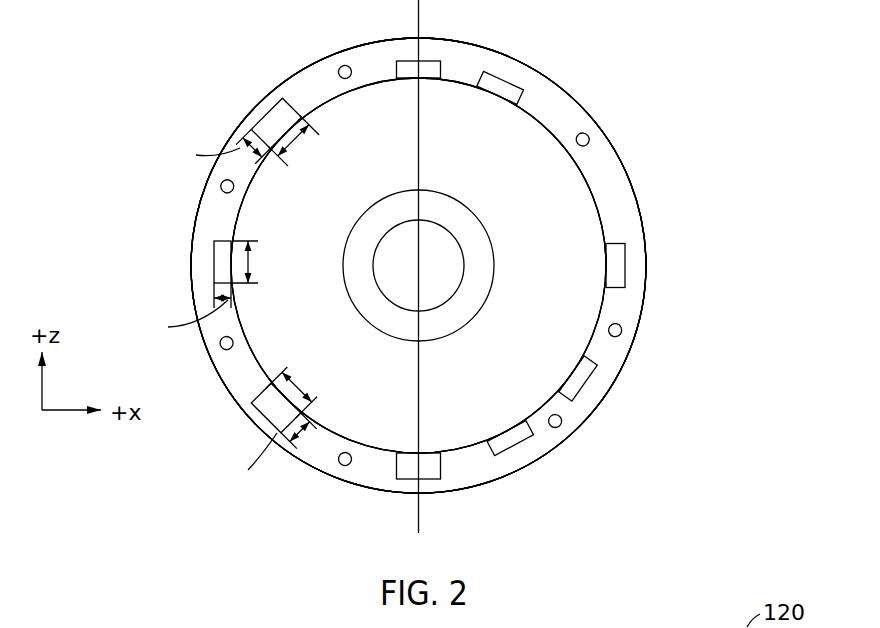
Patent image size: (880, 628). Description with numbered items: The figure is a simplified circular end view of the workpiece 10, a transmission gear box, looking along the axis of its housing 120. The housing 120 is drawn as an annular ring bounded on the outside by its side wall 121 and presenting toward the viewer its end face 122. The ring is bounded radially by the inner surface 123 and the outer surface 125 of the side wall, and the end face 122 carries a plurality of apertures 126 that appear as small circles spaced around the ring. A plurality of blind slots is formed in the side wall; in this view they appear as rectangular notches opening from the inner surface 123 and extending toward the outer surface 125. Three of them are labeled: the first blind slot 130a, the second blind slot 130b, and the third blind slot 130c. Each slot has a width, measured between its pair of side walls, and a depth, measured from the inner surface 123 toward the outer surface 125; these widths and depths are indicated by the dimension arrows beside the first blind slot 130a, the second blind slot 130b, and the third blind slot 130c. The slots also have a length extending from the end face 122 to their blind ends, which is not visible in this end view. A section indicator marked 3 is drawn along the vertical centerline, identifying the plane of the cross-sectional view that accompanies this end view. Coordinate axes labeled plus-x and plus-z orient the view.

The workpiece 10 is at (705, 70).
The housing 120 is at (637, 183).
The side wall 121 is at (643, 221).
The end face 122 is at (632, 306).
The inner surface 123 is at (372, 447).
The outer surface 125 is at (303, 458).
The apertures 126 is at (624, 333).
The first blind slot 130a is at (275, 412).
The second blind slot 130b is at (223, 257).
The third blind slot 130c is at (270, 117).
The section line 3 is at (418, 533).